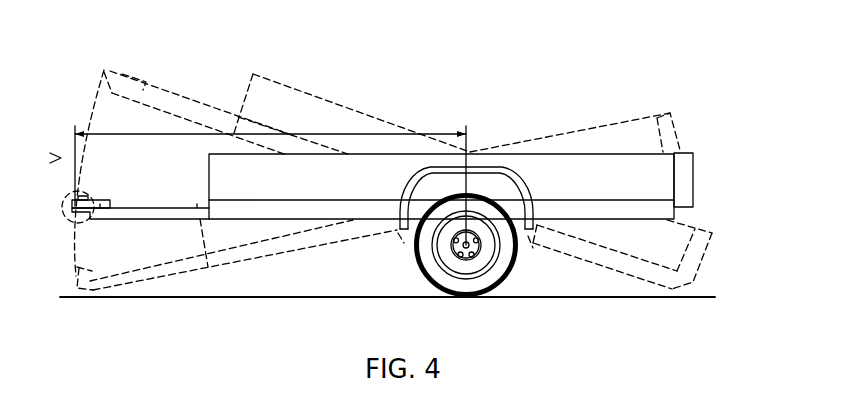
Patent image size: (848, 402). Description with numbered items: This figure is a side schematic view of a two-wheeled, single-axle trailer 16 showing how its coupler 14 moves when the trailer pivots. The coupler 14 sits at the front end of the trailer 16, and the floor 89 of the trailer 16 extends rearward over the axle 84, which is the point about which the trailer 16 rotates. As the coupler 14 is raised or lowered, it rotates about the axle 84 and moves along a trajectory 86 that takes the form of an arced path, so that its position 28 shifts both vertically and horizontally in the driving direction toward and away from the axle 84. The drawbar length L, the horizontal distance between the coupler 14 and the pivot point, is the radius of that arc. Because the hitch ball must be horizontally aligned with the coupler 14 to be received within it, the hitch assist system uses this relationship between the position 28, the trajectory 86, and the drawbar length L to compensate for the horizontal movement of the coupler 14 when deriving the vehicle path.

The trailer 16 is at (477, 76).
The coupler 14 is at (69, 208).
The position of the coupler 28 is at (90, 190).
The axle 84 is at (473, 253).
The trajectory 86 is at (94, 116).
The floor 89 is at (553, 206).
The drawbar length L is at (338, 133).